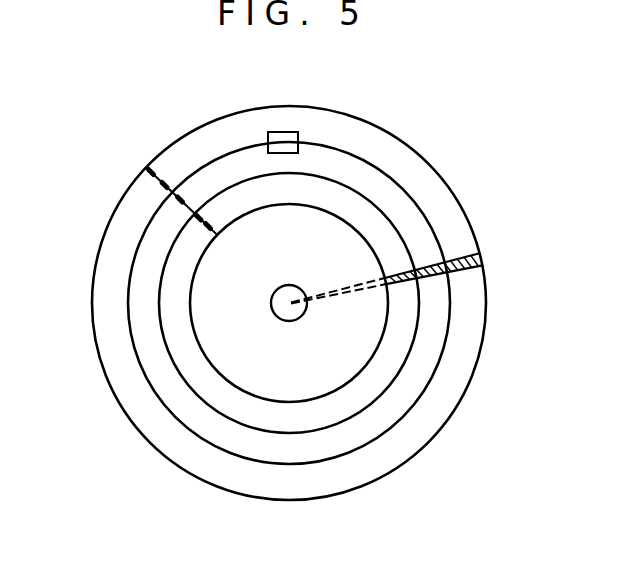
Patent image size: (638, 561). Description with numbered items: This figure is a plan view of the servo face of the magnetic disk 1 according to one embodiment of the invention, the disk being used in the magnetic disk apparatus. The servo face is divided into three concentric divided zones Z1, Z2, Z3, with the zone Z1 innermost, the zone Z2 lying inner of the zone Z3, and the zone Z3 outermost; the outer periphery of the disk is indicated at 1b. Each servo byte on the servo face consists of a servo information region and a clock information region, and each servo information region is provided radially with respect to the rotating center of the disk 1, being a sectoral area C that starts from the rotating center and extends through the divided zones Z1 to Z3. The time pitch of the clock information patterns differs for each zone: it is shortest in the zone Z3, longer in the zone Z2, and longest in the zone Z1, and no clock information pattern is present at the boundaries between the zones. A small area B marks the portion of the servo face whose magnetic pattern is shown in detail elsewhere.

The magnetic disk 1 is at (306, 282).
The outer peripheral portion of disk 1b is at (458, 198).
The area B is at (285, 132).
The hatched area C is at (483, 258).
The divided zone z1 Z1 is at (221, 216).
The divided zone z2 Z2 is at (178, 206).
The divided zone z3 Z3 is at (170, 168).